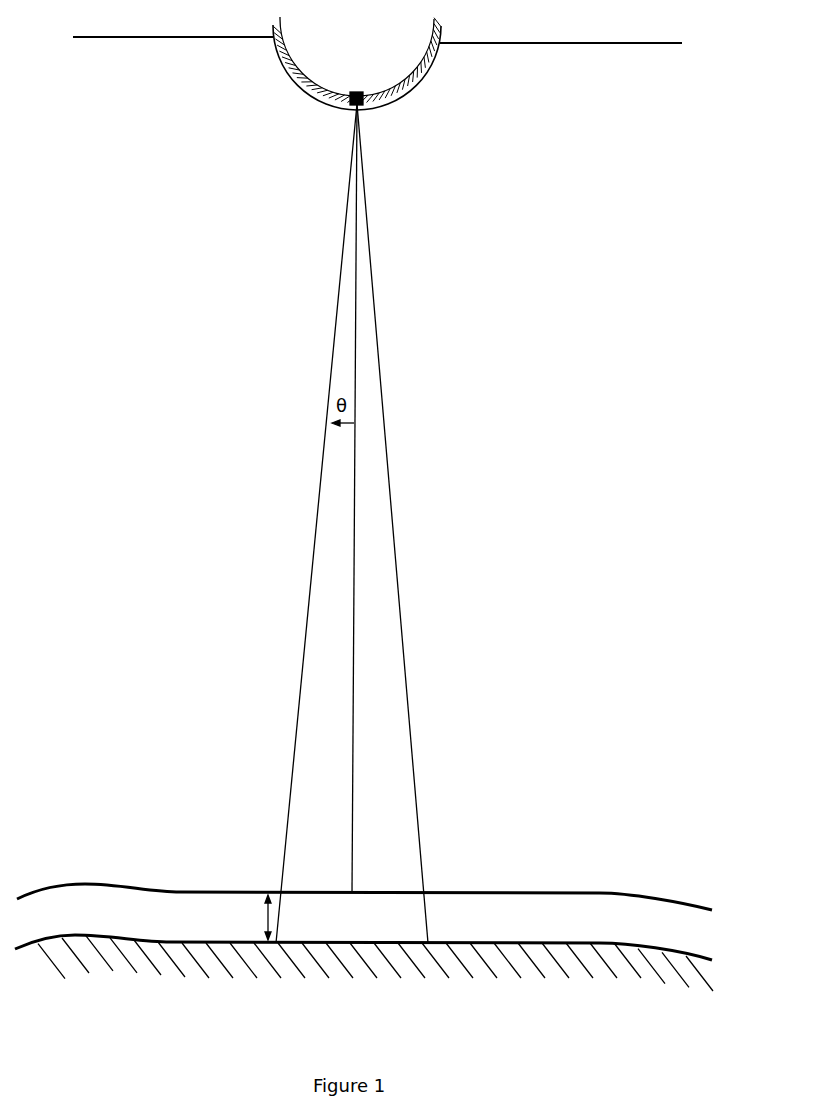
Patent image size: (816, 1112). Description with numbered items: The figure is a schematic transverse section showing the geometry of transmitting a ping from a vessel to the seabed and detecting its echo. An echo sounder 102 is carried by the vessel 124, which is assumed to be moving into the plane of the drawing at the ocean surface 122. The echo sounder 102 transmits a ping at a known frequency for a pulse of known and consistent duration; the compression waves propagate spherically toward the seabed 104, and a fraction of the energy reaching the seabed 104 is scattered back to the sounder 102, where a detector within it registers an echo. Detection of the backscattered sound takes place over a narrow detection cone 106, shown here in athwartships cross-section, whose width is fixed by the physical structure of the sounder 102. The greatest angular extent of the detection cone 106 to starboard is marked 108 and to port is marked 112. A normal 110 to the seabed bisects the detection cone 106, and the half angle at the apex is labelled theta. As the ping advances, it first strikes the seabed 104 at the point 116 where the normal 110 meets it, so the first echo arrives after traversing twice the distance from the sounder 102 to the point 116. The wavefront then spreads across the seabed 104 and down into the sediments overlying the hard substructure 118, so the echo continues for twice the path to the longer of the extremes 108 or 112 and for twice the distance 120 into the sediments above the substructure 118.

The echo sounder 102 is at (364, 105).
The seabed 104 is at (645, 893).
The detection cone 106 is at (385, 398).
The greatest angular extent of the detection cone to starboard 108 is at (398, 570).
The normal 110 is at (352, 550).
The greatest angular extent of the detection cone to port 112 is at (310, 562).
The point 116 is at (352, 890).
The hard substructure 118 is at (688, 956).
The distance into the sediments 120 is at (262, 915).
The ocean surface 122 is at (573, 44).
The vessel 124 is at (427, 80).